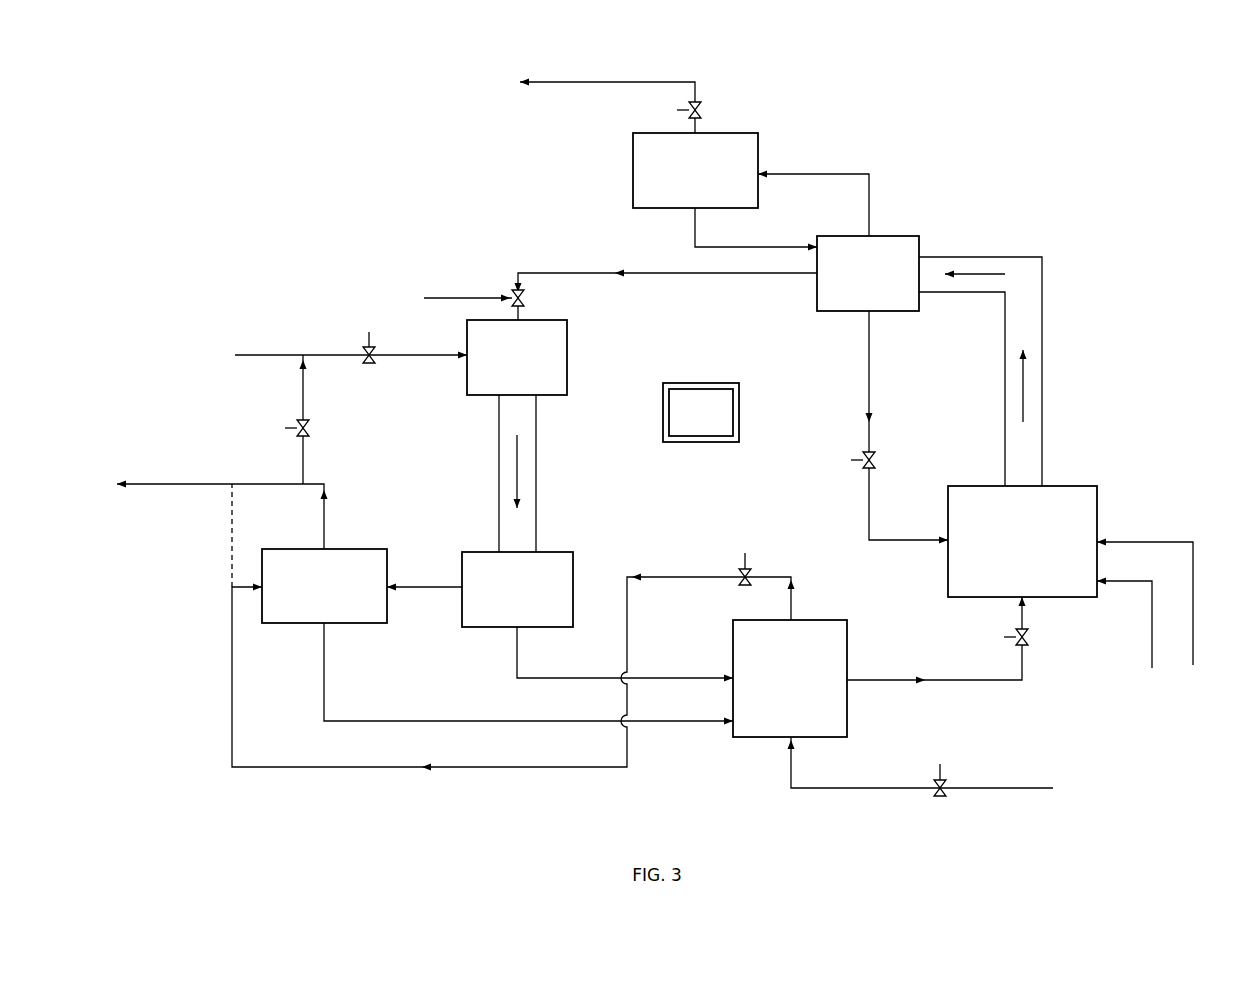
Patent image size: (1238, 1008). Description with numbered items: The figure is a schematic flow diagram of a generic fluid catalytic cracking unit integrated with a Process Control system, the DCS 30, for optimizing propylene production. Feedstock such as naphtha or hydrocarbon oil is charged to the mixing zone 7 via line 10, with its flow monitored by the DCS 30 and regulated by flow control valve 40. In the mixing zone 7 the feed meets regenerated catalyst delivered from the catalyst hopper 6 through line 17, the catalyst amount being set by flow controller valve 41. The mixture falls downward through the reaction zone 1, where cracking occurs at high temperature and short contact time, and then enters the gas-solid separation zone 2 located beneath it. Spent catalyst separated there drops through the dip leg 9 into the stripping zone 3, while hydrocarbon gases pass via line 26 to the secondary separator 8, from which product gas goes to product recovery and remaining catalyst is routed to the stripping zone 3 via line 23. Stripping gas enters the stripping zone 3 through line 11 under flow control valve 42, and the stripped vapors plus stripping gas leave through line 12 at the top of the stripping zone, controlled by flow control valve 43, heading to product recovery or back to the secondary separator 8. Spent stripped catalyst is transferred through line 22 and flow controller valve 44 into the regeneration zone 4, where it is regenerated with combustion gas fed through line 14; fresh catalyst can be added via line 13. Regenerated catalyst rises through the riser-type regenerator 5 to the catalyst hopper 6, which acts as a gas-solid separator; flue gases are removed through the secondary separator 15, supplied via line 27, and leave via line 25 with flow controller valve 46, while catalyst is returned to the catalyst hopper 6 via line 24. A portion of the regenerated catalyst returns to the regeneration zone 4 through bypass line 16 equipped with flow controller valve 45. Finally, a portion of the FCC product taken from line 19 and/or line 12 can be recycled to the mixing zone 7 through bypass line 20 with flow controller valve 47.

The reaction zone 1 is at (499, 457).
The gas-solid separation zone 2 is at (485, 552).
The stripping zone 3 is at (815, 620).
The regeneration zone 4 is at (1097, 497).
The riser-type regenerator 5 is at (1042, 337).
The catalyst hopper 6 is at (897, 236).
The mixing zone 7 is at (568, 340).
The secondary separator 8 is at (352, 623).
The dip leg 9 is at (535, 678).
The feed line 10 is at (270, 355).
The stripping gas line 11 is at (1015, 788).
The stripped vapor line 12 is at (770, 577).
The fresh catalyst line 13 is at (1152, 618).
The combustion gas line 14 is at (1130, 542).
The secondary separator 15 is at (633, 163).
The bypass line 16 is at (869, 360).
The catalyst supply line 17 is at (558, 270).
The product line 19 is at (275, 484).
The bypass line 20 is at (303, 398).
The spent catalyst transfer line 22 is at (970, 680).
The catalyst return line 23 is at (360, 721).
The catalyst return line 24 is at (695, 227).
The flue gas line 25 is at (687, 121).
The hydrocarbon gas line 26 is at (440, 587).
The supply line 27 is at (869, 187).
The Process Control (DCS) 30 is at (739, 405).
The flow control valve 40 is at (358, 343).
The flow controller valve 41 is at (535, 298).
The flow control valve 42 is at (950, 800).
The flow control valve 43 is at (752, 545).
The flow controller valve 44 is at (1035, 645).
The flow controller valve 45 is at (855, 450).
The flow controller valve 46 is at (705, 102).
The flow controller valve 47 is at (318, 432).